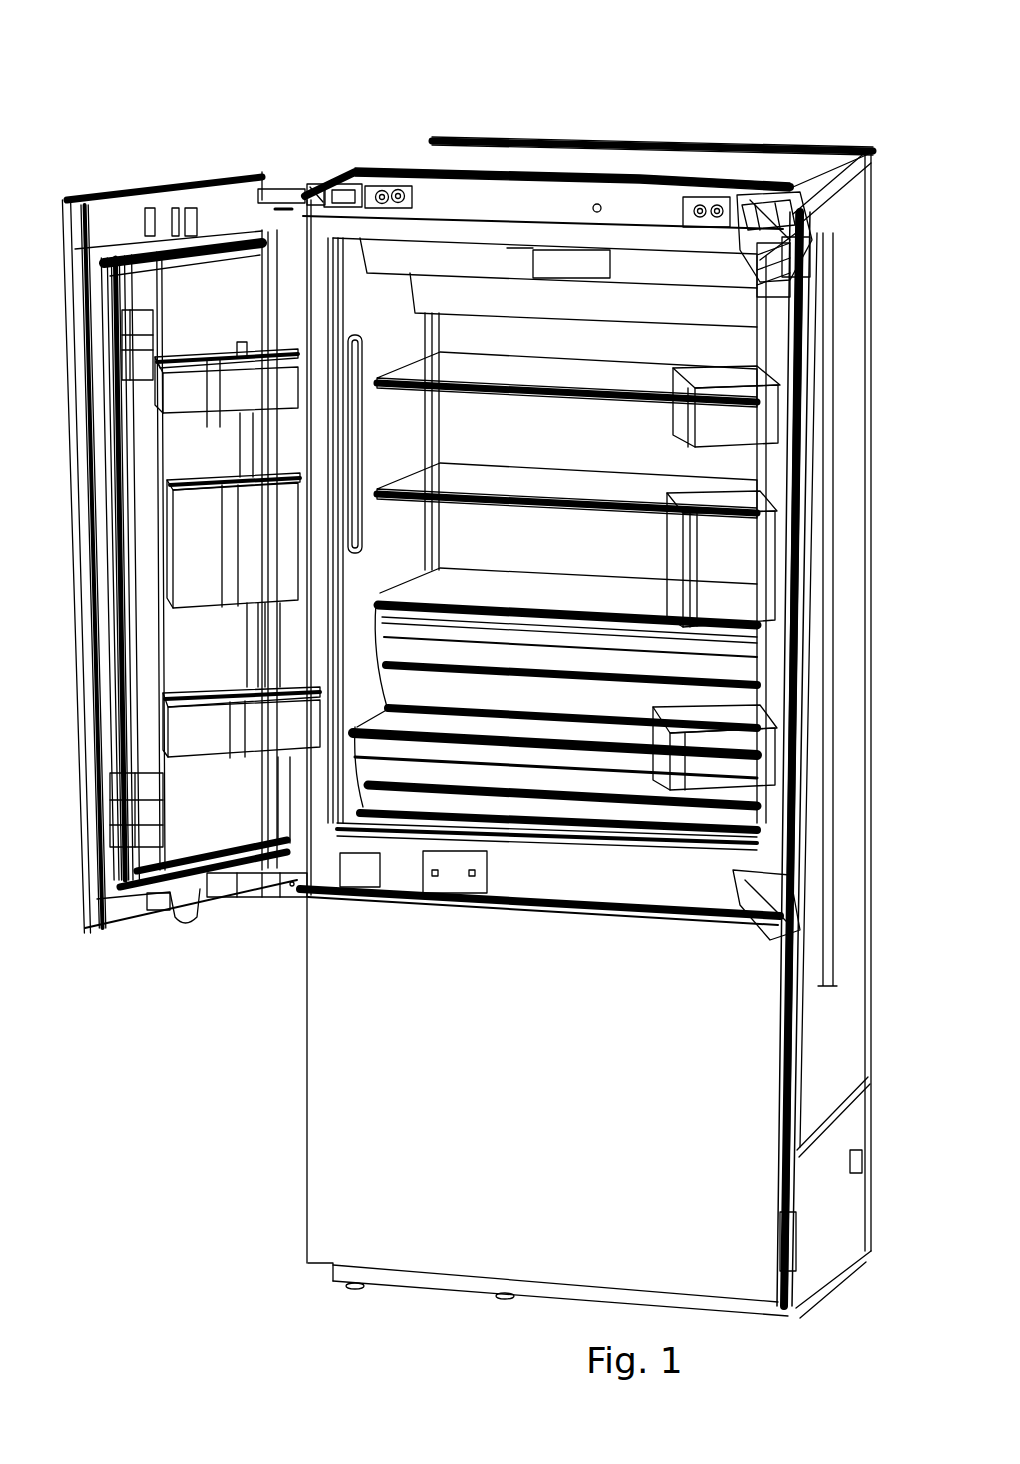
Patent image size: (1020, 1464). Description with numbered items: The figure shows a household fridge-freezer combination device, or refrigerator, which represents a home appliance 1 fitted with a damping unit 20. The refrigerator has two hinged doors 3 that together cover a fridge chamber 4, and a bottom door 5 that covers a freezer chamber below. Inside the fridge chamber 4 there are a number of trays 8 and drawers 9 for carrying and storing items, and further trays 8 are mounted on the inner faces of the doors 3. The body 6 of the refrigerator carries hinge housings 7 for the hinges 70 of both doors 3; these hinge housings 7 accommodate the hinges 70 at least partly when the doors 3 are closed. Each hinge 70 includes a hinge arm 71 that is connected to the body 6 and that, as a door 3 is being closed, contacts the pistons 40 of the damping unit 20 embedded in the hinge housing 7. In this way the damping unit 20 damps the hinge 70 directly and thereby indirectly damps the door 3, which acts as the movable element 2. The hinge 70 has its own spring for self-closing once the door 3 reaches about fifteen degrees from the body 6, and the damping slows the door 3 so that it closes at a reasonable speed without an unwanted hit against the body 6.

The home appliance 1 is at (250, 1192).
The movable element 2 is at (830, 260).
The door 3 is at (128, 213).
The fridge chamber 4 is at (507, 340).
The bottom door 5 is at (400, 1216).
The body 6 is at (620, 165).
The hinge housing 7 is at (745, 215).
The tray 8 is at (625, 483).
The drawer 9 is at (730, 670).
The damping unit 20 is at (404, 182).
The piston 40 is at (386, 186).
The hinge 70 is at (303, 195).
The hinge arm 71 is at (350, 190).